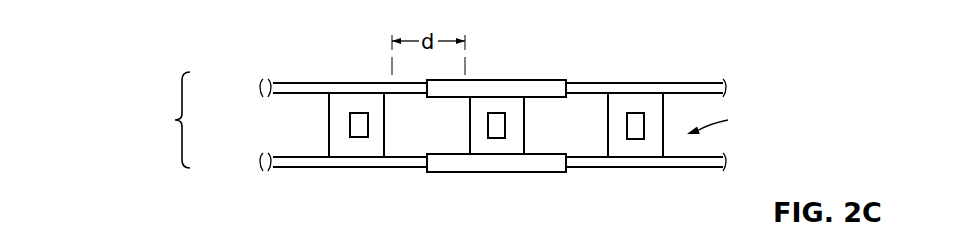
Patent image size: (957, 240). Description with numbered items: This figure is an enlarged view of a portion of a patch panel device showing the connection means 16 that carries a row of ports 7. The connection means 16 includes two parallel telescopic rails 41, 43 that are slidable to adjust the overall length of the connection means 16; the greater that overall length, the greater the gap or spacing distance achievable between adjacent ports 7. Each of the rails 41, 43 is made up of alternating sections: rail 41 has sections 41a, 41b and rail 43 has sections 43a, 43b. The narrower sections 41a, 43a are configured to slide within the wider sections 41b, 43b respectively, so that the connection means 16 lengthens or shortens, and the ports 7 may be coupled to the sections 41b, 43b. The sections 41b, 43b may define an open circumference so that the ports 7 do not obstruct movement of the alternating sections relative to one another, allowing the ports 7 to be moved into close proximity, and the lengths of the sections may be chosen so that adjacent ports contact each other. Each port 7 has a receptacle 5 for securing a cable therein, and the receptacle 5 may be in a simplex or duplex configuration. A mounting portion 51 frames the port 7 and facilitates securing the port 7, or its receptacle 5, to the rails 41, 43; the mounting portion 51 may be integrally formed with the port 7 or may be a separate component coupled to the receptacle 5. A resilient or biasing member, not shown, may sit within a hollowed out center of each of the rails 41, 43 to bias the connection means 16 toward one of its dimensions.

The connection means 16 is at (168, 120).
The rail 41 is at (258, 86).
The rail 43 is at (258, 163).
The section 41a is at (313, 82).
The section 41b is at (503, 80).
The section 43a is at (342, 168).
The section 43b is at (457, 172).
The mounting portion 51 is at (650, 100).
The receptacle 5 is at (633, 125).
The port 7 is at (716, 120).